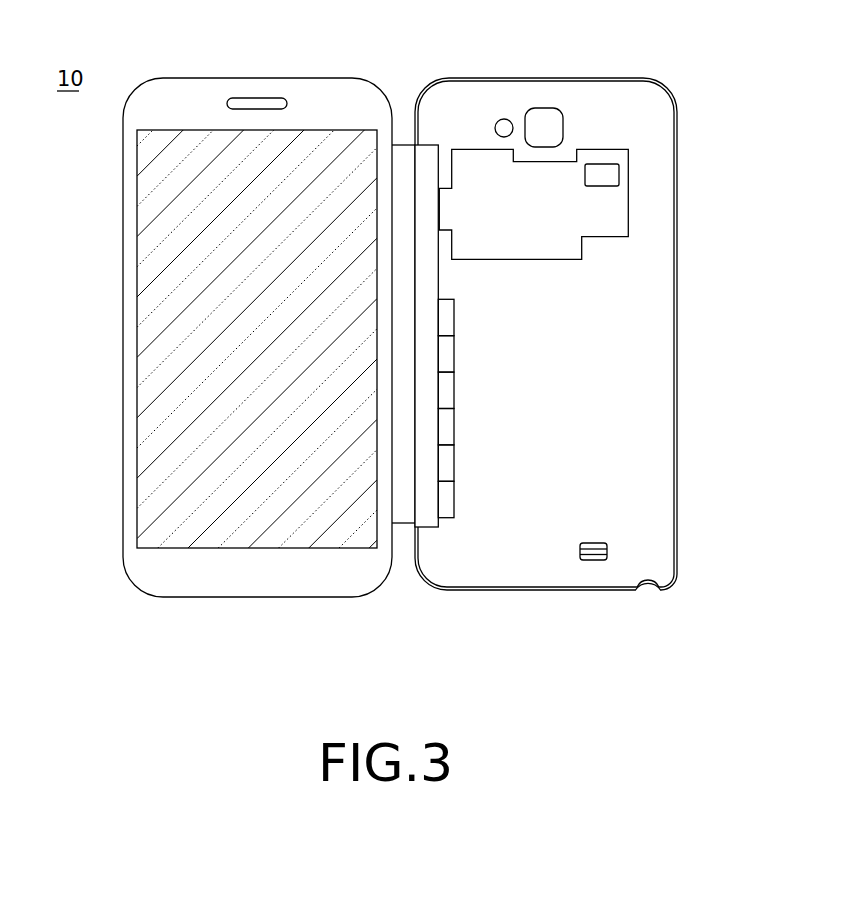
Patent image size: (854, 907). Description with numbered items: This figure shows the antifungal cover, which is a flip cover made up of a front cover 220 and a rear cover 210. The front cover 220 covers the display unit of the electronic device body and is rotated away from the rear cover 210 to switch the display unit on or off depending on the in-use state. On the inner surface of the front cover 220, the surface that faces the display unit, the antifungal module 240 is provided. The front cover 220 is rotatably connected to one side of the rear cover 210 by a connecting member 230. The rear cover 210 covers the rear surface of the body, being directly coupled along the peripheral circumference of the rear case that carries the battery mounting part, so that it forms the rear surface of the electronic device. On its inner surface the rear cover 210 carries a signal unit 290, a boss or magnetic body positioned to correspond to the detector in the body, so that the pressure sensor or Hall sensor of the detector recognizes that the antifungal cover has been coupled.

The rear cover 210 is at (533, 570).
The front cover 220 is at (258, 582).
The connecting member 230 is at (403, 515).
The antifungal module 240 is at (150, 335).
The signal unit 290 is at (610, 175).